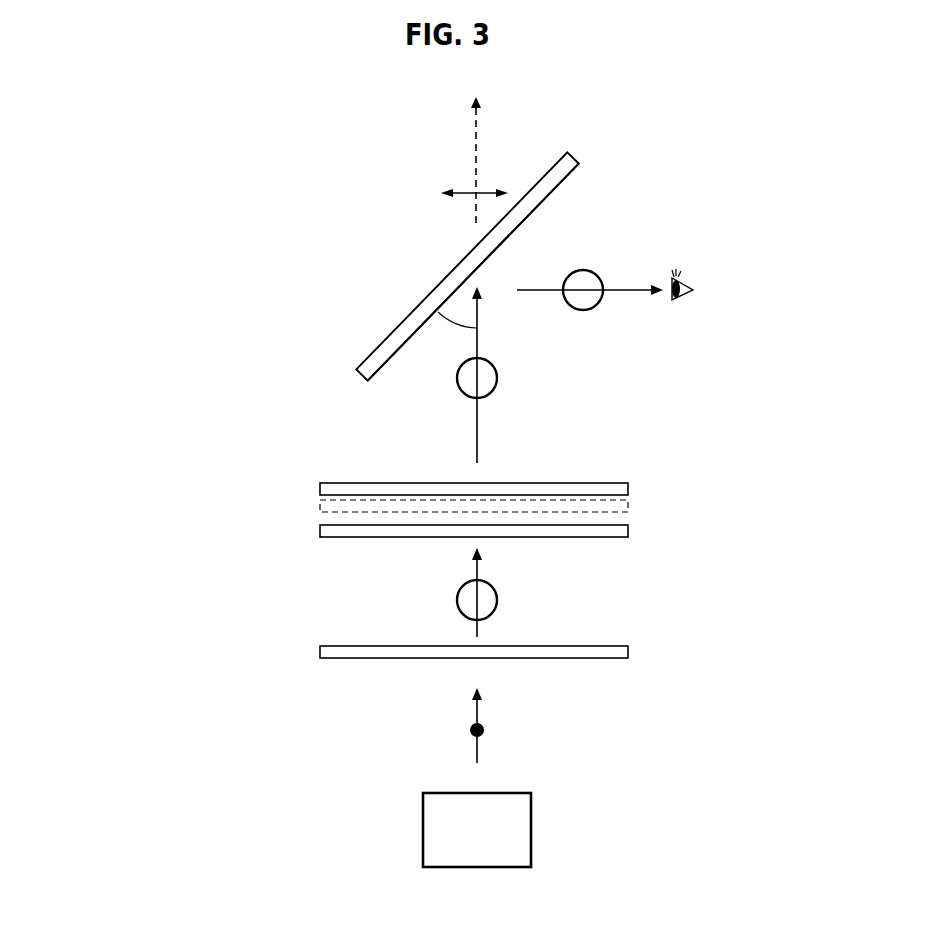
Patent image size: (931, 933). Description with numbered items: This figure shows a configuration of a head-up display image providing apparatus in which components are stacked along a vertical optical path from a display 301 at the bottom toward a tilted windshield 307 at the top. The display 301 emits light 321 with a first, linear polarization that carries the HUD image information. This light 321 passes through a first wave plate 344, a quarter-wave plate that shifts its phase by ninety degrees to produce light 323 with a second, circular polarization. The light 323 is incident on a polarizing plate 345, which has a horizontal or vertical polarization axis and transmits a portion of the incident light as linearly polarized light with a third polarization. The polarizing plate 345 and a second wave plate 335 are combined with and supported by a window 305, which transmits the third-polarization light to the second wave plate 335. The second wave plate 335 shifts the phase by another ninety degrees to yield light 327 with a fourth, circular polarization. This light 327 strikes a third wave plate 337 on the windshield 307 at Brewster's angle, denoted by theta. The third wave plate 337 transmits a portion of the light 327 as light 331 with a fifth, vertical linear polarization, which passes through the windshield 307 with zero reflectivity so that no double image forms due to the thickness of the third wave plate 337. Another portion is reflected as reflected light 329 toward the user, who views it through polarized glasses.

The display 301 is at (531, 828).
The window 305 is at (628, 506).
The windshield 307 is at (387, 335).
The light with first polarization 321 is at (478, 745).
The light with second polarization 323 is at (478, 573).
The light with fourth polarization 327 is at (476, 430).
The reflected light 329 is at (622, 292).
The light with fifth polarization 331 is at (476, 147).
The second wave plate 335 is at (320, 489).
The third wave plate 337 is at (562, 183).
The first wave plate 344 is at (320, 652).
The polarizing plate 345 is at (320, 531).